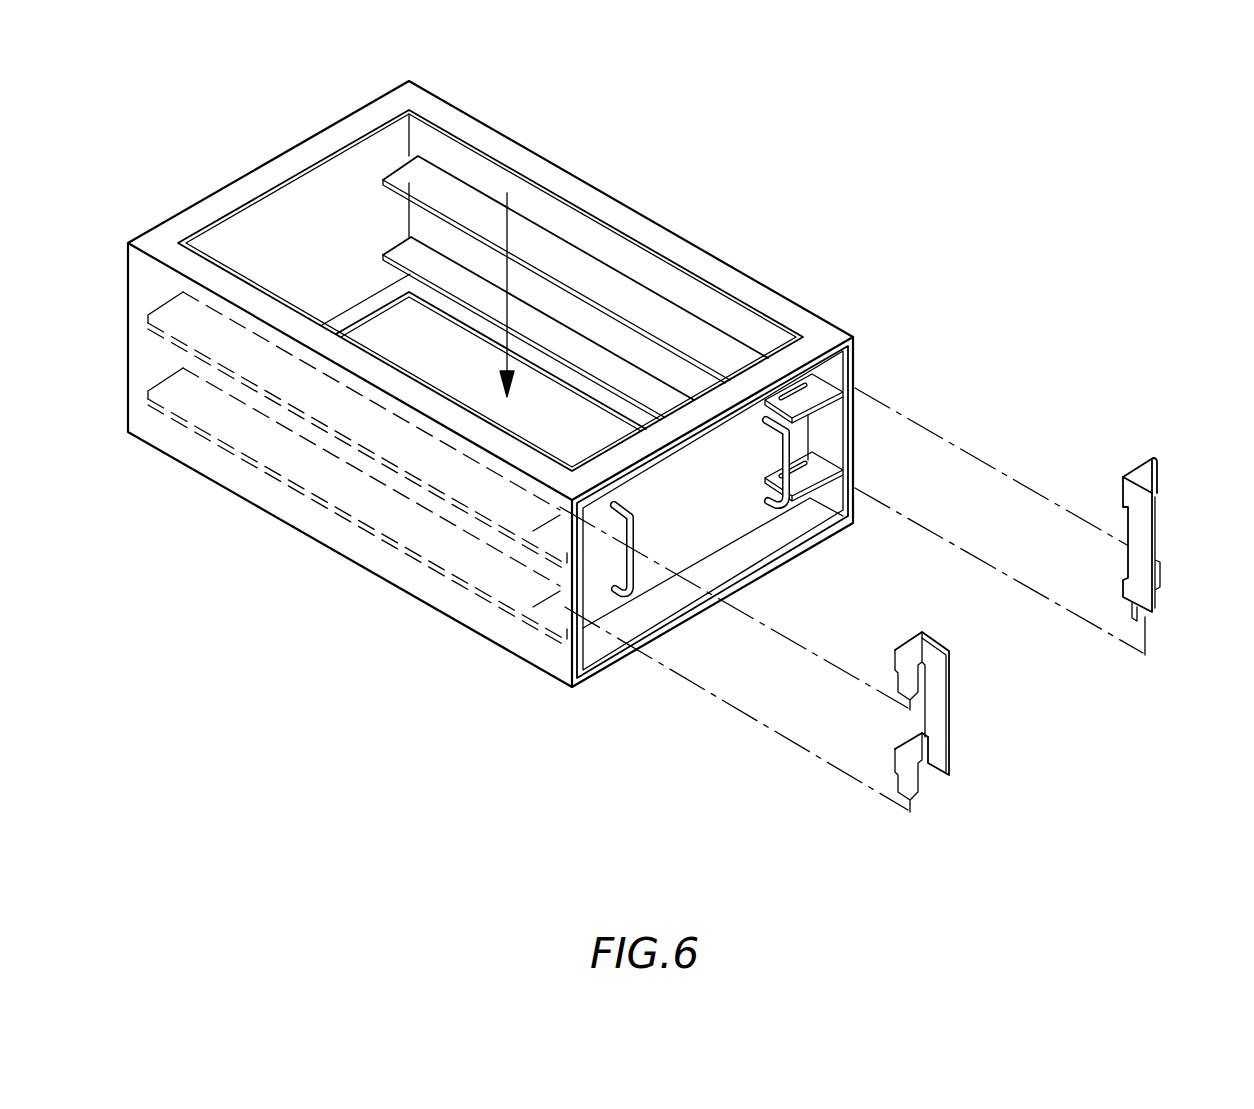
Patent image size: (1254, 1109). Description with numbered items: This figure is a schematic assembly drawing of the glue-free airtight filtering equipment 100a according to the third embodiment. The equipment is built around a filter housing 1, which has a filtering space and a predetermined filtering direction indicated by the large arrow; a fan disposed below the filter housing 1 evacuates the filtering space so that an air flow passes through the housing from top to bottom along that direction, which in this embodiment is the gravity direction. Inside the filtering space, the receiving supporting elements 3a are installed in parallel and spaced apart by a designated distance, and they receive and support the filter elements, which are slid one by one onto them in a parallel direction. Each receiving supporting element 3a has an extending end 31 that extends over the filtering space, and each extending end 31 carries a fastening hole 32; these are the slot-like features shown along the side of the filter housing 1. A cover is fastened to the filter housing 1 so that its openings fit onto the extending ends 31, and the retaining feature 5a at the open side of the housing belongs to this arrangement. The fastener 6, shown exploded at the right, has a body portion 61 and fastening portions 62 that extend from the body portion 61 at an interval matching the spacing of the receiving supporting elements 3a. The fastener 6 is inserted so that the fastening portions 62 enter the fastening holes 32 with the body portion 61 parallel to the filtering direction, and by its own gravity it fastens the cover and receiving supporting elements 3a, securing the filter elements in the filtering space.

The glue-free airtight filtering equipment 100a is at (1151, 174).
The filter housing 1 is at (368, 646).
The receiving supporting element 3a is at (638, 307).
The retaining structure 5a is at (750, 541).
The extending end 31 is at (583, 613).
The fastening hole 32 is at (533, 606).
The fastener 6 is at (1045, 670).
The body portion 61 is at (937, 703).
The fastening portion 62 is at (912, 781).